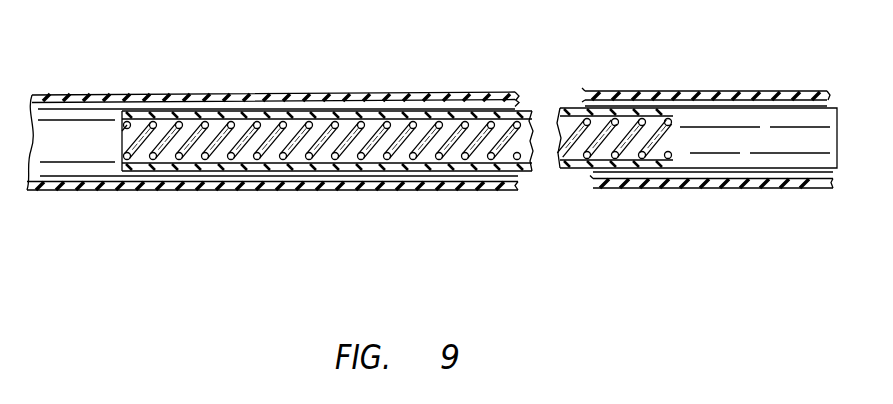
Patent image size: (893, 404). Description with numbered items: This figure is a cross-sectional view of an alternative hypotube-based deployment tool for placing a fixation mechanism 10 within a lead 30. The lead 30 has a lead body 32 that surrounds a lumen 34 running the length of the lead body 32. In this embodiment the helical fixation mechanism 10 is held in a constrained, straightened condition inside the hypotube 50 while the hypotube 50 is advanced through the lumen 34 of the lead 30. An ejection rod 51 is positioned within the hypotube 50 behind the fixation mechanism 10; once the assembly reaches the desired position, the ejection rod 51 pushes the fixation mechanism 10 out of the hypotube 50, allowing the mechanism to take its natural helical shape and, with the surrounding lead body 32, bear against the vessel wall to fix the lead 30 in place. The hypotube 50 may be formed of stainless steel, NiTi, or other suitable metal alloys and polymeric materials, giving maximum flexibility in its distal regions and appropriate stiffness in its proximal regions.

The fixation mechanism 10 is at (413, 160).
The lead 30 is at (277, 189).
The lead body 32 is at (79, 95).
The lumen 34 is at (76, 170).
The hypotube 50 is at (224, 111).
The ejection rod 51 is at (716, 118).